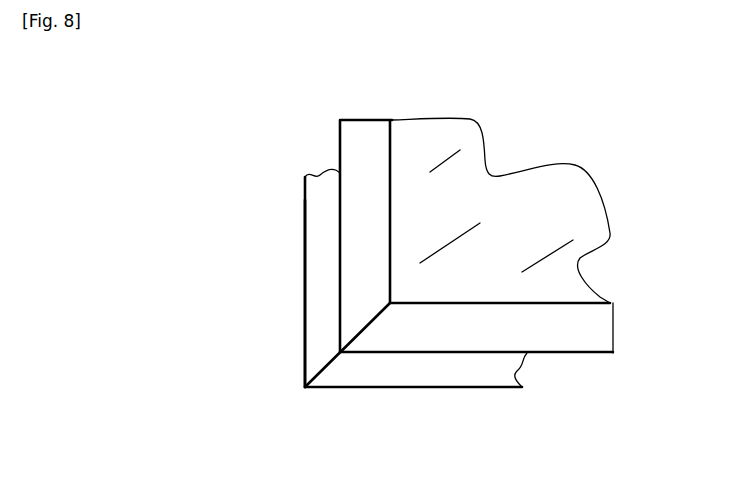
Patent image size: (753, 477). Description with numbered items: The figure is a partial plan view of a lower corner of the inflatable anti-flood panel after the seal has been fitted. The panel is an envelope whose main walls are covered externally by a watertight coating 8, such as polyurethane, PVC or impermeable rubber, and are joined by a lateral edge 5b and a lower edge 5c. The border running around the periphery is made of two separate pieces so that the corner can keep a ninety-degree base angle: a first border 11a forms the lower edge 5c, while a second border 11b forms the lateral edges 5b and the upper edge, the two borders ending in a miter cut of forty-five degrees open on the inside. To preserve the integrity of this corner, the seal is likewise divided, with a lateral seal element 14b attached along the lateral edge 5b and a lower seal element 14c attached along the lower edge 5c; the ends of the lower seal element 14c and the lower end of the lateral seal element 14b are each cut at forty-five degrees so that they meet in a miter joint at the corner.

The watertight coating 8 is at (573, 202).
The first border 11a is at (595, 322).
The second border 11b is at (363, 143).
The lateral edge 5b is at (340, 152).
The lower edge 5c is at (552, 355).
The lateral seal element 14b is at (318, 275).
The lower seal element 14c is at (373, 360).